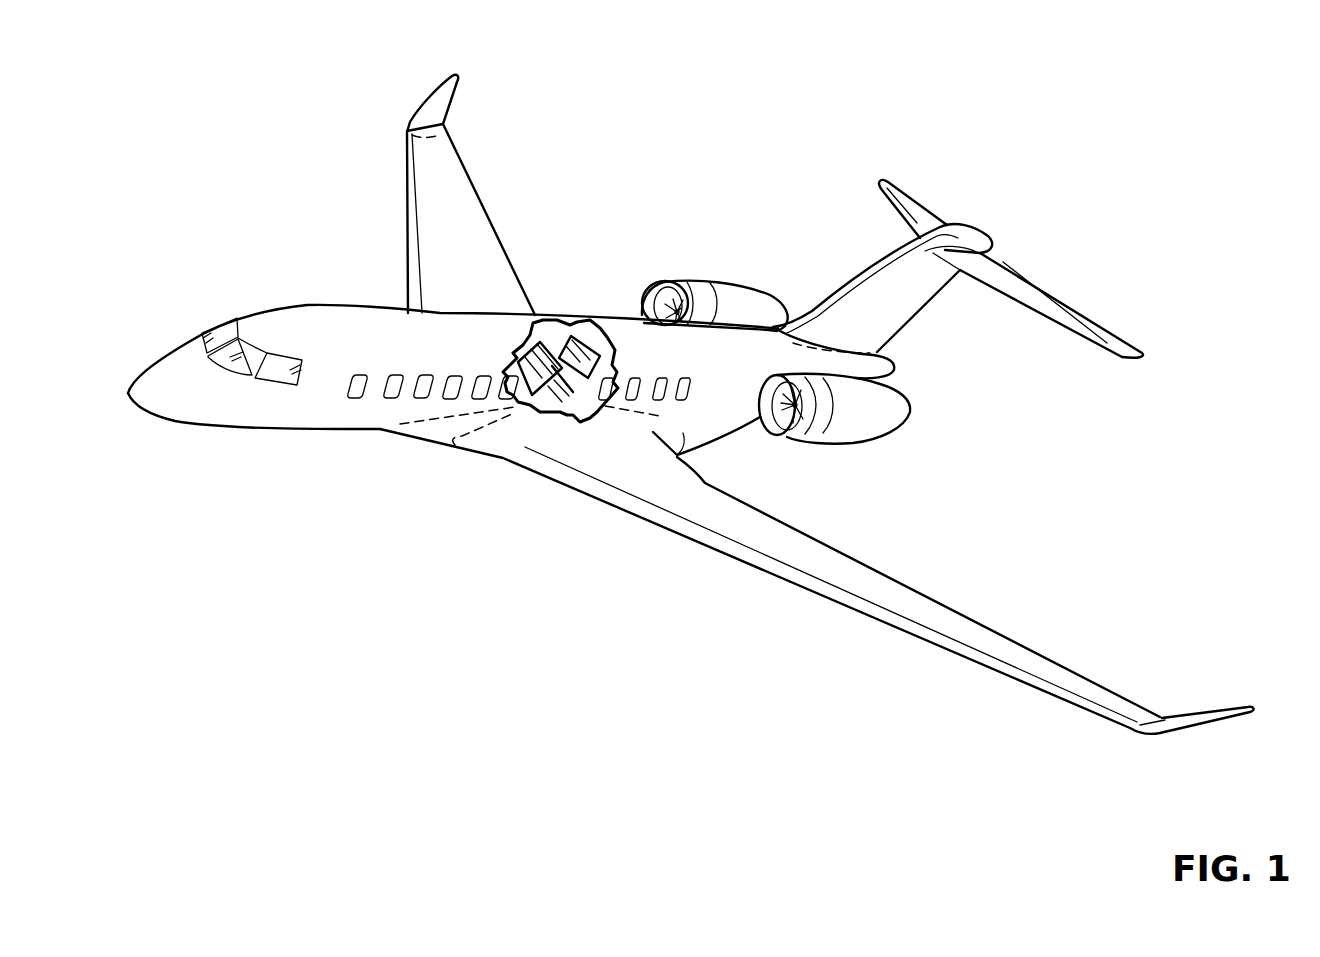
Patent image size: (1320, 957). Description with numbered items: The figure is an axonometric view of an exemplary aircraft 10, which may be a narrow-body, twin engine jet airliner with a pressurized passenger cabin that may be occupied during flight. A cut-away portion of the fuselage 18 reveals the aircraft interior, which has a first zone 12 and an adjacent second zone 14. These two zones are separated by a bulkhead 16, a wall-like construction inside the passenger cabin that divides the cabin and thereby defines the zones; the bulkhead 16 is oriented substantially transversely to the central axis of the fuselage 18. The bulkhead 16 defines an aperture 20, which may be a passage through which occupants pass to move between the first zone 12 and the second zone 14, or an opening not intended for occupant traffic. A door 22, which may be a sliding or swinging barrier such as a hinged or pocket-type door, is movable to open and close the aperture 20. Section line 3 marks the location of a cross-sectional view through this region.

The aircraft 10 is at (243, 106).
The first zone 12 is at (542, 363).
The second zone 14 is at (593, 368).
The bulkhead 16 is at (533, 356).
The fuselage 18 is at (305, 318).
The aperture 20 is at (593, 368).
The door 22 is at (553, 364).
The section line 3- 3 is at (647, 452).